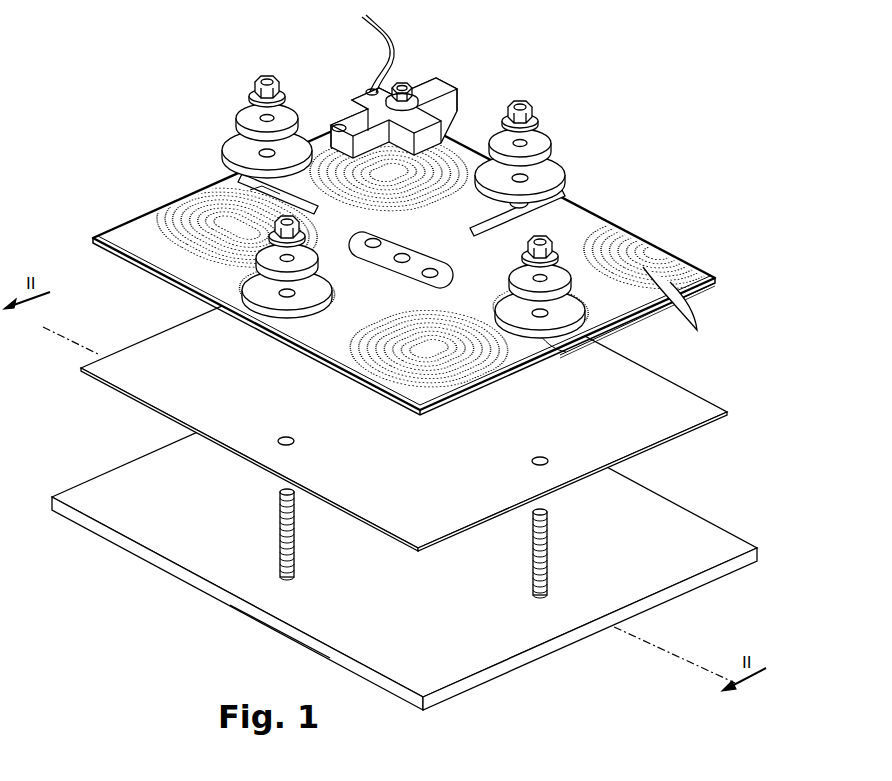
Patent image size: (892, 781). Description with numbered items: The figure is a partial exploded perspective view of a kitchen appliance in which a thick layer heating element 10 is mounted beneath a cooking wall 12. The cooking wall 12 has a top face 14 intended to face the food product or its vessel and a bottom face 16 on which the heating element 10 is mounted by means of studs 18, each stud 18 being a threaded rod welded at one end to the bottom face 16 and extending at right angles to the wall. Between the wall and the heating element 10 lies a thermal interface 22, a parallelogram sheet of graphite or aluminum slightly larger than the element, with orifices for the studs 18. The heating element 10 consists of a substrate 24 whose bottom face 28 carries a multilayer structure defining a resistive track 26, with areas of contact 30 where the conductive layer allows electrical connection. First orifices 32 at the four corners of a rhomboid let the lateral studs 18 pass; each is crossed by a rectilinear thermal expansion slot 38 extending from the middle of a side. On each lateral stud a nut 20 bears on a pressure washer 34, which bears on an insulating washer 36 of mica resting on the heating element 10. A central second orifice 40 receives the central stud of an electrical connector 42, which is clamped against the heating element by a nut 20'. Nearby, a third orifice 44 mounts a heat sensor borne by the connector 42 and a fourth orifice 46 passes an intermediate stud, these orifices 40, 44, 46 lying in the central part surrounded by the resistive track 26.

The thick layer heating element 10 is at (670, 242).
The cooking wall 12 is at (693, 547).
The top face 14 is at (352, 672).
The bottom face 16 is at (317, 610).
The stud 18 is at (275, 540).
The nut 20 is at (384, 184).
The nut 20' is at (401, 63).
The thermal interface 22 is at (706, 402).
The substrate 24 is at (710, 268).
The bottom face of the substrate 28 is at (637, 322).
The resistive track 26 is at (675, 310).
The areas of contact 30 is at (540, 210).
The first orifices 32 is at (267, 192).
The pressure washer 34 is at (540, 140).
The insulating washer 36 is at (562, 172).
The thermal expansion slot 38 is at (245, 190).
The second orifice 40 is at (402, 264).
The electrical connector 42 is at (455, 92).
The third orifice 44 is at (373, 249).
The fourth orifice 46 is at (430, 279).